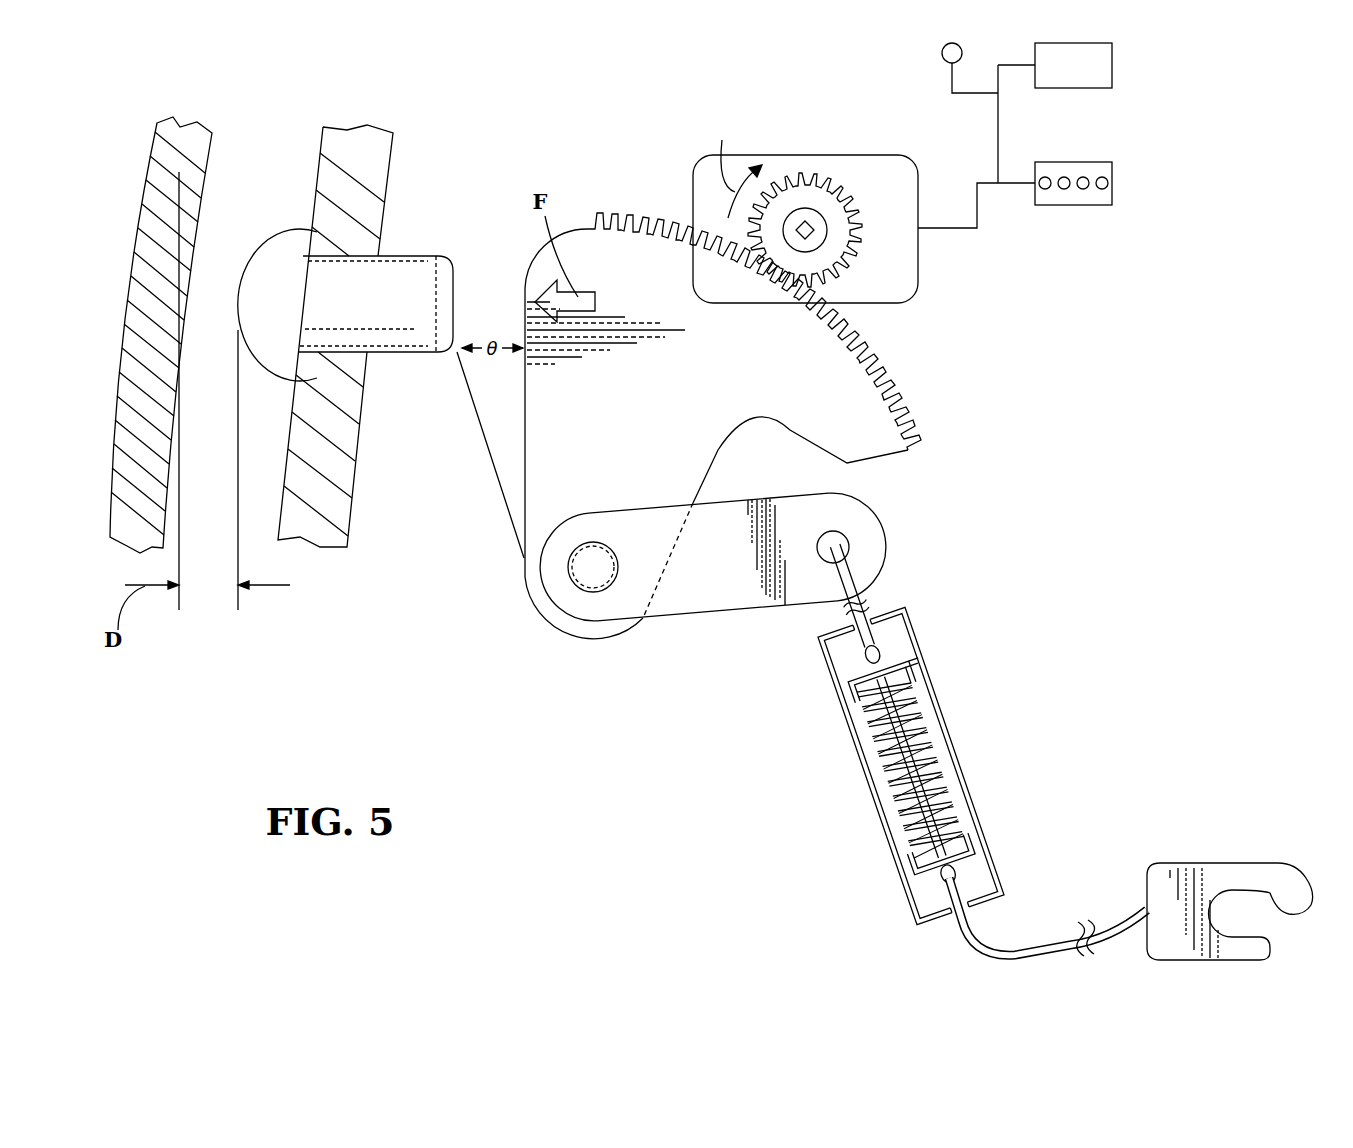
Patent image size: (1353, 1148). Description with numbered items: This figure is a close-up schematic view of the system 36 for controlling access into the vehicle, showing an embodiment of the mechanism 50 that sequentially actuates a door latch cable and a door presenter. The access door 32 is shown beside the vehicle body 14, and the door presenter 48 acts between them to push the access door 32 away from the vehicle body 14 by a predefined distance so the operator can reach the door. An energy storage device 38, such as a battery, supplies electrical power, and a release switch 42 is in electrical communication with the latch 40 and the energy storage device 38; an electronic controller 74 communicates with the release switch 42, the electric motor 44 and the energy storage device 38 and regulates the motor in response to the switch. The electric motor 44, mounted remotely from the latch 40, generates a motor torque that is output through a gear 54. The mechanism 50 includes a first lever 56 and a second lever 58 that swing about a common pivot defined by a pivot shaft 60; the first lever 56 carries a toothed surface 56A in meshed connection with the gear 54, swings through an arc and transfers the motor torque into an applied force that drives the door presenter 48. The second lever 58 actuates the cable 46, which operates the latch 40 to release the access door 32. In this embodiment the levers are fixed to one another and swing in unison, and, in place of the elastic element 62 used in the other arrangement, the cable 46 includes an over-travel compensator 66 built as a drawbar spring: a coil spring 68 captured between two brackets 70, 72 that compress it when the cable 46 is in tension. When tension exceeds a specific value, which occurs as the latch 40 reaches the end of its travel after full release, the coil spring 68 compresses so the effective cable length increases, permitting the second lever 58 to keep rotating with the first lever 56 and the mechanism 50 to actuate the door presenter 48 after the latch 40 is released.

The vehicle body 14 is at (162, 190).
The access door 32 is at (337, 168).
The door presenter 48 is at (262, 275).
The system for controlling access 36 is at (555, 130).
The first lever 56 is at (801, 380).
The toothed surface 56A is at (655, 222).
The gear 54 is at (815, 200).
The electric motor 44 is at (897, 195).
The release switch 42 is at (942, 54).
The electronic controller 74 is at (1085, 79).
The energy storage device 38 is at (1073, 207).
The mechanism 50 is at (922, 474).
The second lever 58 is at (725, 565).
The pivot shaft 60 is at (585, 592).
The elastic element 62 is at (745, 614).
The bracket 70 is at (905, 665).
The coil spring 68 is at (918, 720).
The over-travel compensator 66 is at (965, 775).
The bracket 72 is at (985, 855).
The cable 46 is at (1115, 907).
The latch 40 is at (1217, 863).